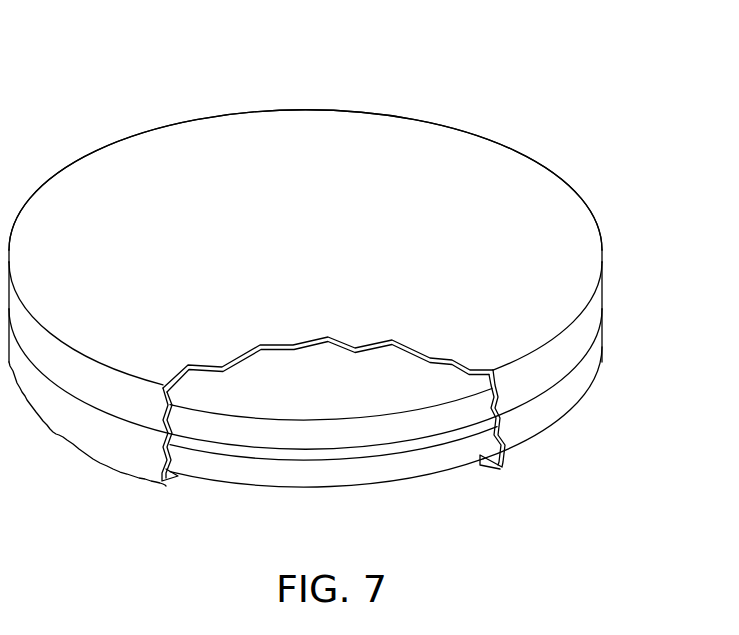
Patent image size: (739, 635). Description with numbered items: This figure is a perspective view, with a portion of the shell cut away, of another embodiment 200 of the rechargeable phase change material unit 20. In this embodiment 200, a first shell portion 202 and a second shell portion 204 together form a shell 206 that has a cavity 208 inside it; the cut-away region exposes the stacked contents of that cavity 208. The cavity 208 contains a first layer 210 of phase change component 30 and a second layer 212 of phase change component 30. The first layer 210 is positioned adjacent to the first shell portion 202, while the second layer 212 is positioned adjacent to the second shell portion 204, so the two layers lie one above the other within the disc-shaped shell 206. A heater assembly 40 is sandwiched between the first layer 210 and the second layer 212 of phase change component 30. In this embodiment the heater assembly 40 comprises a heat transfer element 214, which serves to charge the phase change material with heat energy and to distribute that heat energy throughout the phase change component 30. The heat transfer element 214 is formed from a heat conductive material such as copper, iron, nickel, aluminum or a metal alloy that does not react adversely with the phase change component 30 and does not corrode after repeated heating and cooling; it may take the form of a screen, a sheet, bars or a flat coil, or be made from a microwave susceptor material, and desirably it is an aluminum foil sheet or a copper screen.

The embodiment of the rechargeable phase change material unit 200 is at (349, 288).
The rechargeable phase change material unit 20 is at (194, 130).
The phase change component 30 is at (237, 378).
The heater assembly 40 is at (170, 479).
The first shell portion 202 is at (598, 295).
The second shell portion 204 is at (596, 357).
The shell 206 is at (305, 142).
The cavity 208 is at (494, 464).
The first layer 210 is at (182, 418).
The second layer 212 is at (438, 463).
The heat transfer element 214 is at (243, 452).